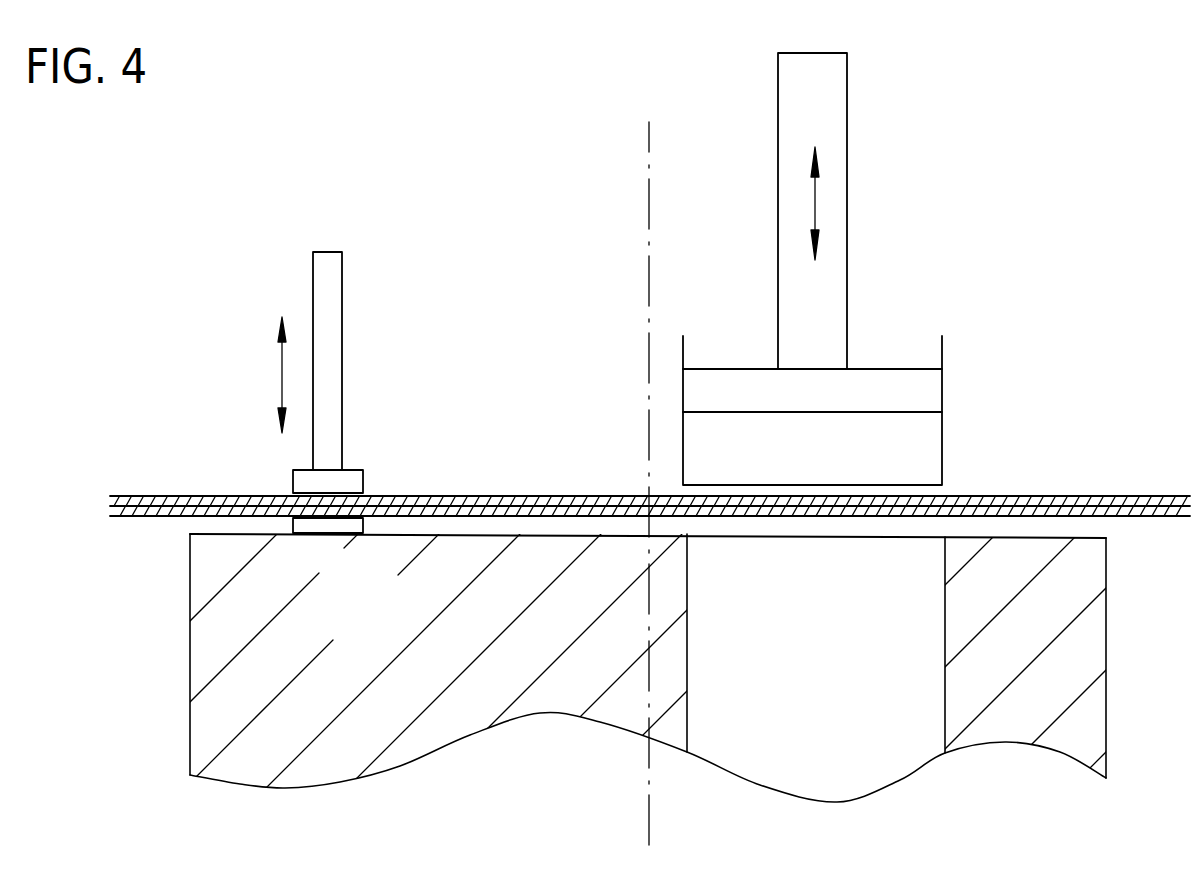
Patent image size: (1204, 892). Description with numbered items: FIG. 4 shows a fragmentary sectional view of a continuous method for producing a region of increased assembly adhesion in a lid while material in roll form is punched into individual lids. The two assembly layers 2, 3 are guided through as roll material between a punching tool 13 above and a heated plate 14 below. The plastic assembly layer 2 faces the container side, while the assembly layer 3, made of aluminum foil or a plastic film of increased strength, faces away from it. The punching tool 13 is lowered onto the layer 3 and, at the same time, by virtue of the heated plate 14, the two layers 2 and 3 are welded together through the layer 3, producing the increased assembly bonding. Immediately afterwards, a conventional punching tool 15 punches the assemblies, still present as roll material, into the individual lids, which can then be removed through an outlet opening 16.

The assembly layer 2 is at (130, 517).
The assembly layer 3 is at (140, 494).
The punching tool 13 is at (328, 292).
The heated plate 14 is at (323, 525).
The conventional punching tool 15 is at (893, 442).
The outlet opening 16 is at (840, 704).